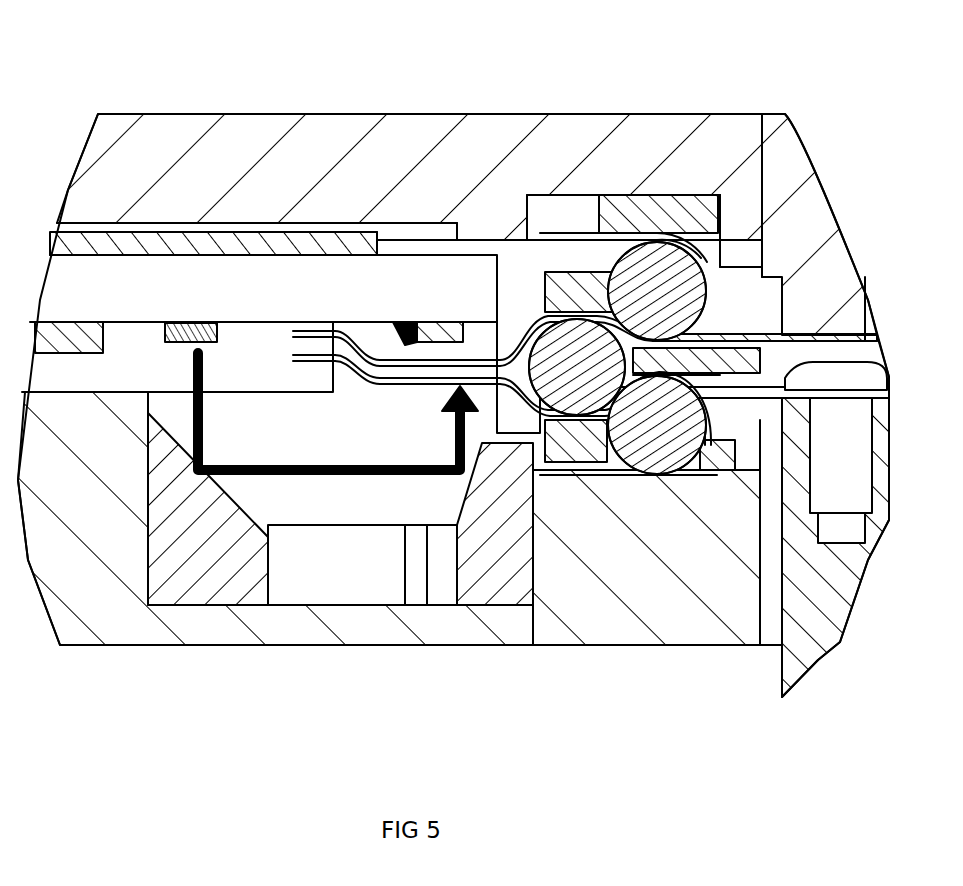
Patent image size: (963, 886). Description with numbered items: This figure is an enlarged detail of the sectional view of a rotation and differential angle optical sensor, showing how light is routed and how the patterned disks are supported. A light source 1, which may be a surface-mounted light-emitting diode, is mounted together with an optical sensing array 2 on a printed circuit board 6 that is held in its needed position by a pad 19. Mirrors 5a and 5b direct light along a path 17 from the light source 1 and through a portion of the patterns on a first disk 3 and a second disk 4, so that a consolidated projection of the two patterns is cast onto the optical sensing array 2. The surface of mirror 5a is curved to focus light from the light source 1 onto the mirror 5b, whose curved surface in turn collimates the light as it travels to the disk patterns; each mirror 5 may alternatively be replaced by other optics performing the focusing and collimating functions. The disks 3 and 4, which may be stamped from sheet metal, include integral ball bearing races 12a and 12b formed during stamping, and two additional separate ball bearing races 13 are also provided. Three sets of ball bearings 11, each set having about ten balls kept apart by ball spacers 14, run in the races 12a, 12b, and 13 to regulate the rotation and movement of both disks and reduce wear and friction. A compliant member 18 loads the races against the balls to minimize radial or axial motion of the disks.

The light source 1 is at (67, 192).
The optical sensing array 2 is at (330, 242).
The first disk 3 is at (191, 329).
The second disk 4 is at (308, 357).
The mirror 5 is at (222, 553).
The mirror 5a is at (193, 477).
The mirror 5b is at (480, 492).
The printed circuit board 6 is at (308, 280).
The ball bearings 11 is at (647, 403).
The integral ball bearing race 12a is at (540, 330).
The integral ball bearing race 12b is at (620, 398).
The separate ball bearing races 13 is at (720, 362).
The ball spacers 14 is at (708, 457).
The path 17 is at (347, 478).
The compliant member 18 is at (690, 207).
The pad 19 is at (307, 333).